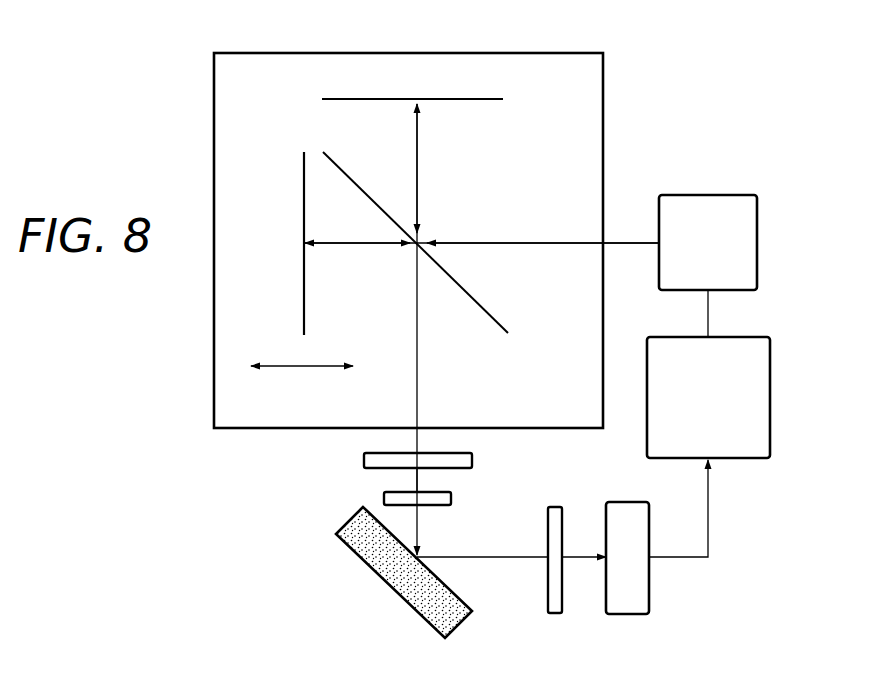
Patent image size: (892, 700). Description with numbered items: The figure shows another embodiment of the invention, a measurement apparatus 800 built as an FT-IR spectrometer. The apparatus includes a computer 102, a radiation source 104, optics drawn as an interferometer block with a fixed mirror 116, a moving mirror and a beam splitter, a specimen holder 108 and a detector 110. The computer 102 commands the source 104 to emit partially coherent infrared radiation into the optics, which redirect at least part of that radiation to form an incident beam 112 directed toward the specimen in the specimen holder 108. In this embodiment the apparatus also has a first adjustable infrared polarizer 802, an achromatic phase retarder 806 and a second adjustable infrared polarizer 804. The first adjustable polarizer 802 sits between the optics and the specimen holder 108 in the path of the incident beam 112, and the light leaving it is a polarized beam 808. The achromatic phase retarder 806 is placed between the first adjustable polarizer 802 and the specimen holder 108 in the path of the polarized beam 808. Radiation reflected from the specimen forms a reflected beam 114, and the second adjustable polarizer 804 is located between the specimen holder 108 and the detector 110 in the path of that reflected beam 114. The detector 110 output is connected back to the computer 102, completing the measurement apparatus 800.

The measurement apparatus 800 is at (343, 33).
The fixed mirror 116 is at (591, 2).
The radiation source 104 is at (716, 195).
The computer 102 is at (733, 460).
The detector 110 is at (650, 590).
The incident beam 112 is at (418, 413).
The reflected beam 114 is at (478, 557).
The specimen holder 108 is at (372, 568).
The first adjustable infrared polarizer 802 is at (364, 460).
The achromatic phase retarder 806 is at (384, 498).
The polarized beam 808 is at (419, 483).
The second adjustable infrared polarizer 804 is at (552, 507).